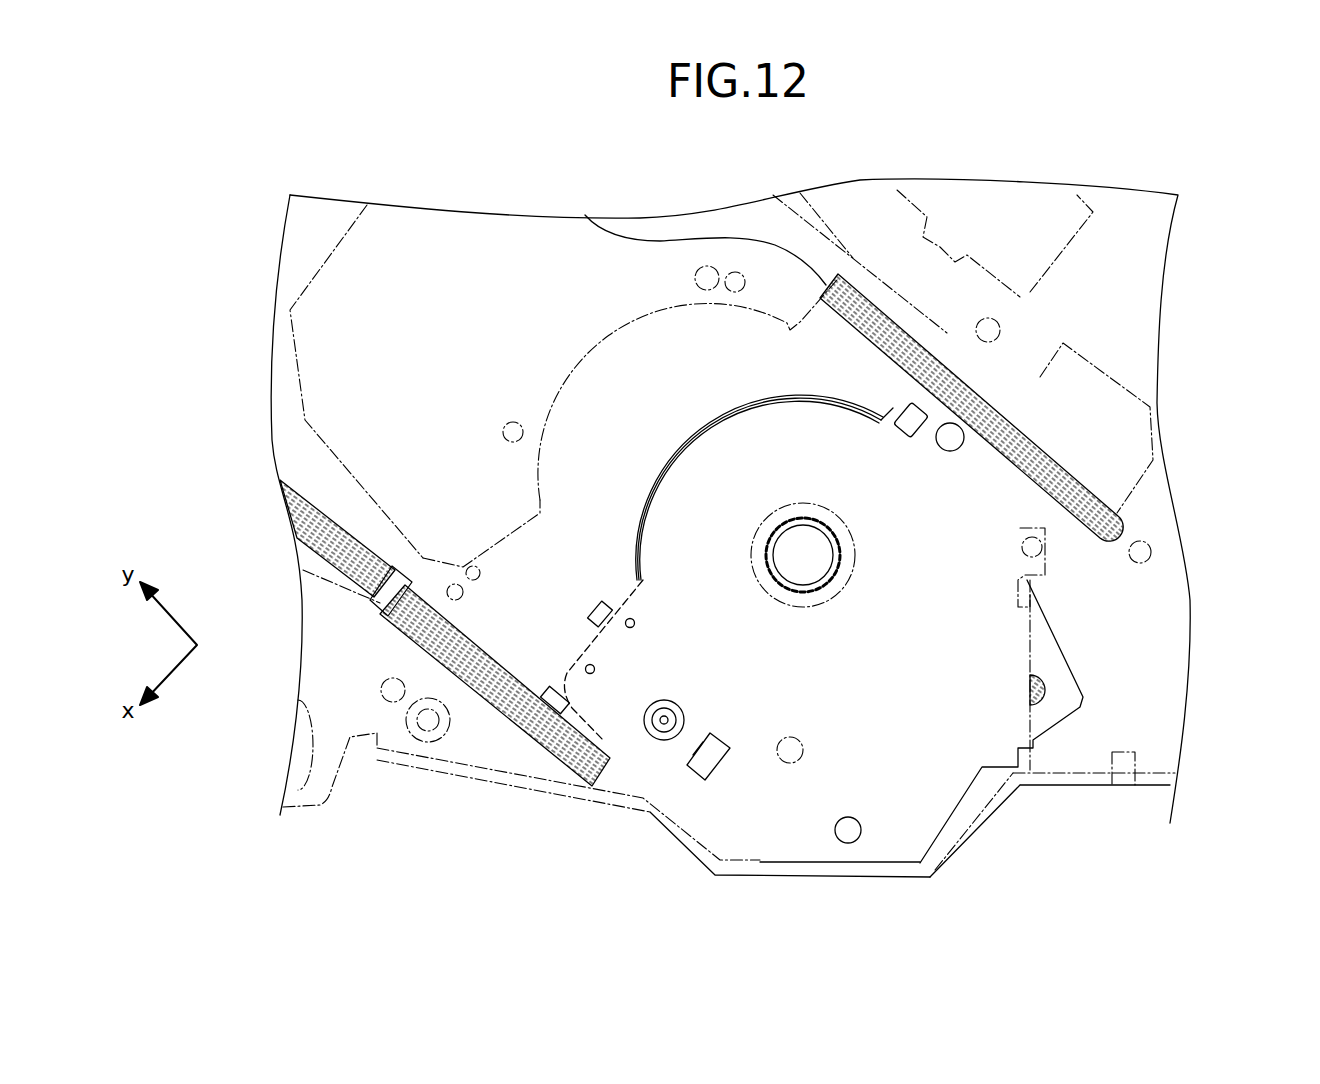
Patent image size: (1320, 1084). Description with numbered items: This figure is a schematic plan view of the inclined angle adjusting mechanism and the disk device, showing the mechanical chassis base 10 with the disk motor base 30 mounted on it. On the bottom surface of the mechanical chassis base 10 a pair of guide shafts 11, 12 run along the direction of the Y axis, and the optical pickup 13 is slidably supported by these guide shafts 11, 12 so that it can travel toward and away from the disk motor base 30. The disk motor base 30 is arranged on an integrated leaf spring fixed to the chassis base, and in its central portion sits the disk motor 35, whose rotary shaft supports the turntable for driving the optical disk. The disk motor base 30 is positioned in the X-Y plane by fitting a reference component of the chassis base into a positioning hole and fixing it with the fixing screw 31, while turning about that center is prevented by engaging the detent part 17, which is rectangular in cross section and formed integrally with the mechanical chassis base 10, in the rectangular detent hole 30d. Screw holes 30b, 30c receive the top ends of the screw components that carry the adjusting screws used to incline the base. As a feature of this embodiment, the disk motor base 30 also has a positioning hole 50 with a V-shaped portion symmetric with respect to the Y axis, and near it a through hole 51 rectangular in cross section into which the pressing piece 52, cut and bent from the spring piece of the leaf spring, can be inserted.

The mechanical chassis base 10 is at (470, 748).
The guide shaft 11 is at (585, 215).
The guide shaft 12 is at (310, 505).
The optical pickup 13 is at (447, 237).
The detent part 17 is at (907, 405).
The disk motor base 30 is at (967, 661).
The screw hole 30b is at (862, 828).
The screw hole 30c is at (955, 425).
The detent hole 30d is at (920, 407).
The fixing screw 31 is at (662, 722).
The disk motor 35 is at (812, 553).
The positioning hole 50 is at (677, 738).
The through hole 51 is at (720, 763).
The pressing piece 52 is at (698, 765).